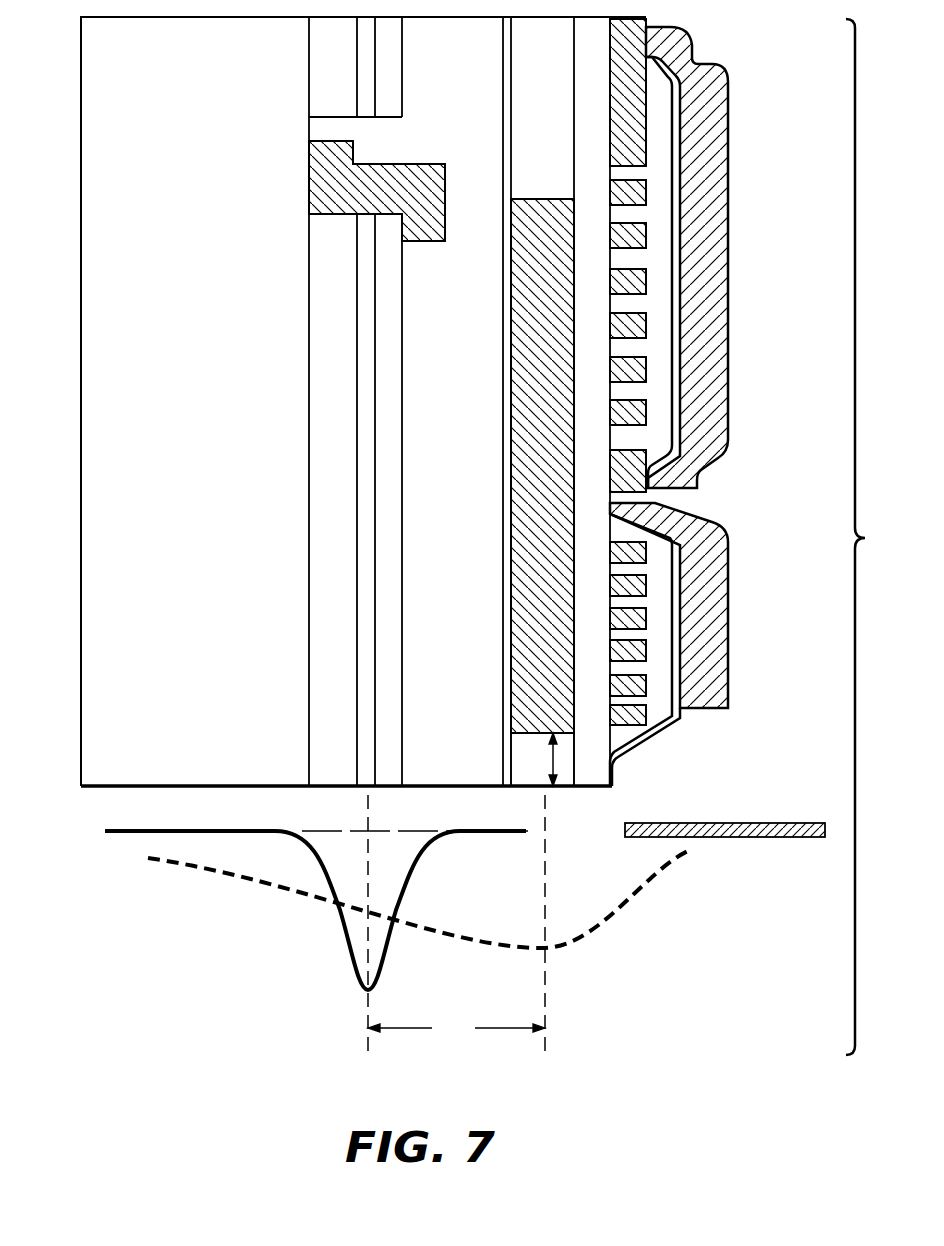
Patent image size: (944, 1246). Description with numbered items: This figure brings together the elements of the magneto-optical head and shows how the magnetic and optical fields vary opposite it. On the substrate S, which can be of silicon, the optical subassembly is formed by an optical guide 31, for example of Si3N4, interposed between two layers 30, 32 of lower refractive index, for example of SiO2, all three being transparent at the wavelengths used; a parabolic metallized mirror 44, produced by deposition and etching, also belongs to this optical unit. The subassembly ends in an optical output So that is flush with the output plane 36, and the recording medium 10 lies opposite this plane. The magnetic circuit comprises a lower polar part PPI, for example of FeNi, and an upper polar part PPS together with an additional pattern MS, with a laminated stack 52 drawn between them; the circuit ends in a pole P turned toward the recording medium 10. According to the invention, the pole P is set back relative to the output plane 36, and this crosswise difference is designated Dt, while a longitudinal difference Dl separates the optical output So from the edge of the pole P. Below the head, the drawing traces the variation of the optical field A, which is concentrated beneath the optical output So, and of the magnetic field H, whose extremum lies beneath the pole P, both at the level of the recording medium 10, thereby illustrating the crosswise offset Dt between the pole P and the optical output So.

The substrate S is at (202, 167).
The output plane 36 is at (114, 787).
The layer 30 is at (318, 308).
The optical guide 31 is at (368, 357).
The layer 32 is at (397, 440).
The parabolic metallized mirror 44 is at (424, 165).
The lower polar part PPI is at (520, 600).
The pole P is at (522, 735).
The crosswise difference Dt is at (557, 758).
The laminated stack 52 is at (646, 282).
The additional pattern MS is at (715, 362).
The upper polar part PPS is at (717, 628).
The recording medium 10 is at (784, 822).
The optical output So is at (364, 787).
The optical field A is at (338, 932).
The magnetic field H is at (622, 907).
The longitudinal difference Dl is at (456, 1027).